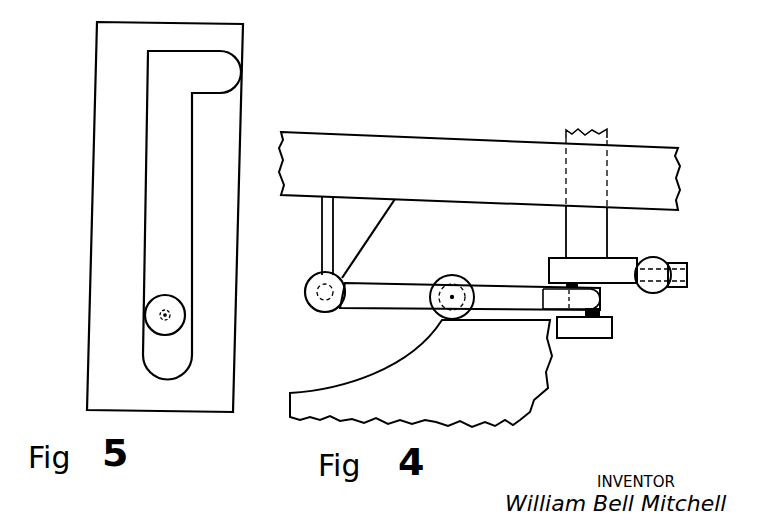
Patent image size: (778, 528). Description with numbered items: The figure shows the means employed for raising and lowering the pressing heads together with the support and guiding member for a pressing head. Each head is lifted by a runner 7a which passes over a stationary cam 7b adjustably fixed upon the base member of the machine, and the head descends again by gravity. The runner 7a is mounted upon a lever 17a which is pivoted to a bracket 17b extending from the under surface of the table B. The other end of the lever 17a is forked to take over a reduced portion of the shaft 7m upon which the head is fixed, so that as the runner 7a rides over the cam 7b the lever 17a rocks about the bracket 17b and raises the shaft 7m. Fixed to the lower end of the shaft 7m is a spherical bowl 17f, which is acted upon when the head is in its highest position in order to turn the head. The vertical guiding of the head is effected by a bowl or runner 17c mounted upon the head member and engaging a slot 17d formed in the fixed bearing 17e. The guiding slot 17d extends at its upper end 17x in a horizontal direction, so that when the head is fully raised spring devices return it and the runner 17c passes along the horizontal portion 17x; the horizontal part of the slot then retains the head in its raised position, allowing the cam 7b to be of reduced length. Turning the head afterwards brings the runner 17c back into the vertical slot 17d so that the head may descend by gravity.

In FIG. 4, the table B is at (473, 146).
In FIG. 5, the fixed bearing 17e is at (107, 98).
In FIG. 5, the guiding slot 17d is at (160, 214).
In FIG. 5, the horizontal portion of slot 17x is at (229, 79).
In FIG. 5, the bowl or runner 17c is at (177, 315).
In FIG. 4, the bracket 17b is at (347, 225).
In FIG. 4, the lever 17a is at (400, 285).
In FIG. 4, the runner 7a is at (460, 277).
In FIG. 4, the shaft 7m is at (597, 237).
In FIG. 4, the spherical bowl 17f is at (657, 260).
In FIG. 4, the stationary cam 7b is at (373, 373).